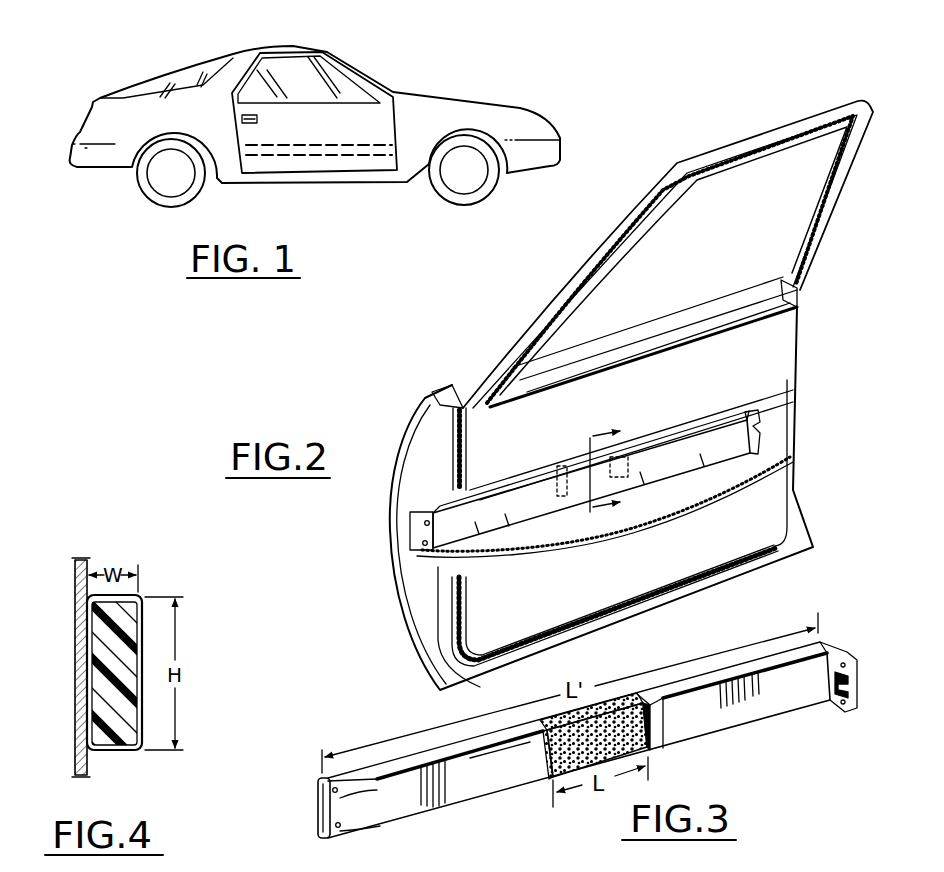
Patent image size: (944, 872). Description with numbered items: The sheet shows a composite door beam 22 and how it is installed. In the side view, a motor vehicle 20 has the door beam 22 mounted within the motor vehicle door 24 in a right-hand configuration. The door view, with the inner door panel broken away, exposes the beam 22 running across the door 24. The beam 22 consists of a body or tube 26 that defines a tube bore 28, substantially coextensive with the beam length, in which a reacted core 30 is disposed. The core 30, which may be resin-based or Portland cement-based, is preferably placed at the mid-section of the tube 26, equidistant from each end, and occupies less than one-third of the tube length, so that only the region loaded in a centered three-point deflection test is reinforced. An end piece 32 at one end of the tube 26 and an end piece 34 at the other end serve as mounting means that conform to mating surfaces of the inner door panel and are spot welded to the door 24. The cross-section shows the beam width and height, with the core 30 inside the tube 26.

In FIG. 1, the motor vehicle 20 is at (402, 58).
In FIG. 1, the composite door beam 22 is at (338, 148).
In FIG. 2, the composite door beam 22 is at (551, 507).
In FIG. 3, the composite door beam 22 is at (574, 737).
In FIG. 1, the motor vehicle door 24 is at (293, 163).
In FIG. 2, the motor vehicle door 24 is at (447, 330).
In FIG. 2, the tube 26 is at (527, 477).
In FIG. 3, the tube 26 is at (491, 781).
In FIG. 4, the tube 26 is at (118, 753).
In FIG. 3, the tube bore 28 is at (653, 707).
In FIG. 3, the core 30 is at (617, 697).
In FIG. 4, the core 30 is at (88, 637).
In FIG. 3, the end piece 32 is at (336, 790).
In FIG. 3, the end piece 34 is at (845, 653).